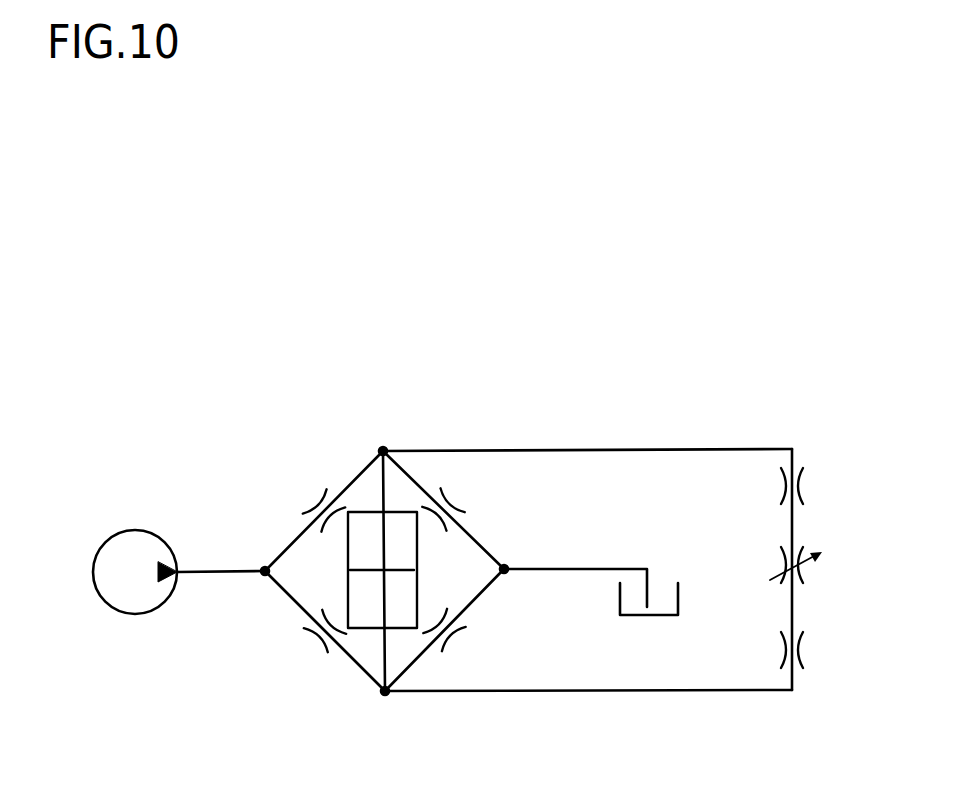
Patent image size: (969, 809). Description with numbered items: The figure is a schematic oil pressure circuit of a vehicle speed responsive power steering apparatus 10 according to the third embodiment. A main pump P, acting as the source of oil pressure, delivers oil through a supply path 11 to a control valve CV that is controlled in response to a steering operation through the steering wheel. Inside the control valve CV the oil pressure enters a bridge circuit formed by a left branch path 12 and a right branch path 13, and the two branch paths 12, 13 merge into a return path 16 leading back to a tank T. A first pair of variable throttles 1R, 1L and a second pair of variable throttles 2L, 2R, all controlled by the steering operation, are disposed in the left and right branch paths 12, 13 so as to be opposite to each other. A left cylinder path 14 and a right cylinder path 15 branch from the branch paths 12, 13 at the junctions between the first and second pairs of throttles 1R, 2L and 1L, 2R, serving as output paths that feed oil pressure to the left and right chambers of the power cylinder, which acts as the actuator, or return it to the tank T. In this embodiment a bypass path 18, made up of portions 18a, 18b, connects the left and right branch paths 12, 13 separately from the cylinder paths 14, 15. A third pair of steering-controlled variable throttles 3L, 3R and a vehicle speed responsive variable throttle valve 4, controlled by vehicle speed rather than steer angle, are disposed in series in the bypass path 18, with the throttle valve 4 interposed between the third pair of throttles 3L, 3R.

The vehicle speed responsive power steering apparatus 10 is at (585, 313).
The supply path 11 is at (220, 572).
The left branch path 12 is at (361, 668).
The right branch path 13 is at (362, 471).
The left cylinder path 14 is at (385, 658).
The right cylinder path 15 is at (383, 475).
The return path 16 is at (590, 567).
The bypass path 18 is at (733, 441).
The bypass path portion 18a is at (648, 692).
The bypass path portion 18b is at (647, 447).
The variable throttle 1L is at (314, 504).
The variable throttle 1R is at (313, 639).
The variable throttle 2L is at (459, 638).
The variable throttle 2R is at (456, 504).
The left variable throttle 3L is at (817, 650).
The right variable throttle 3R is at (818, 486).
The vehicle speed responsive variable throttle valve 4 is at (807, 565).
The control valve CV is at (259, 462).
The main pump P is at (135, 590).
The tank T is at (662, 596).